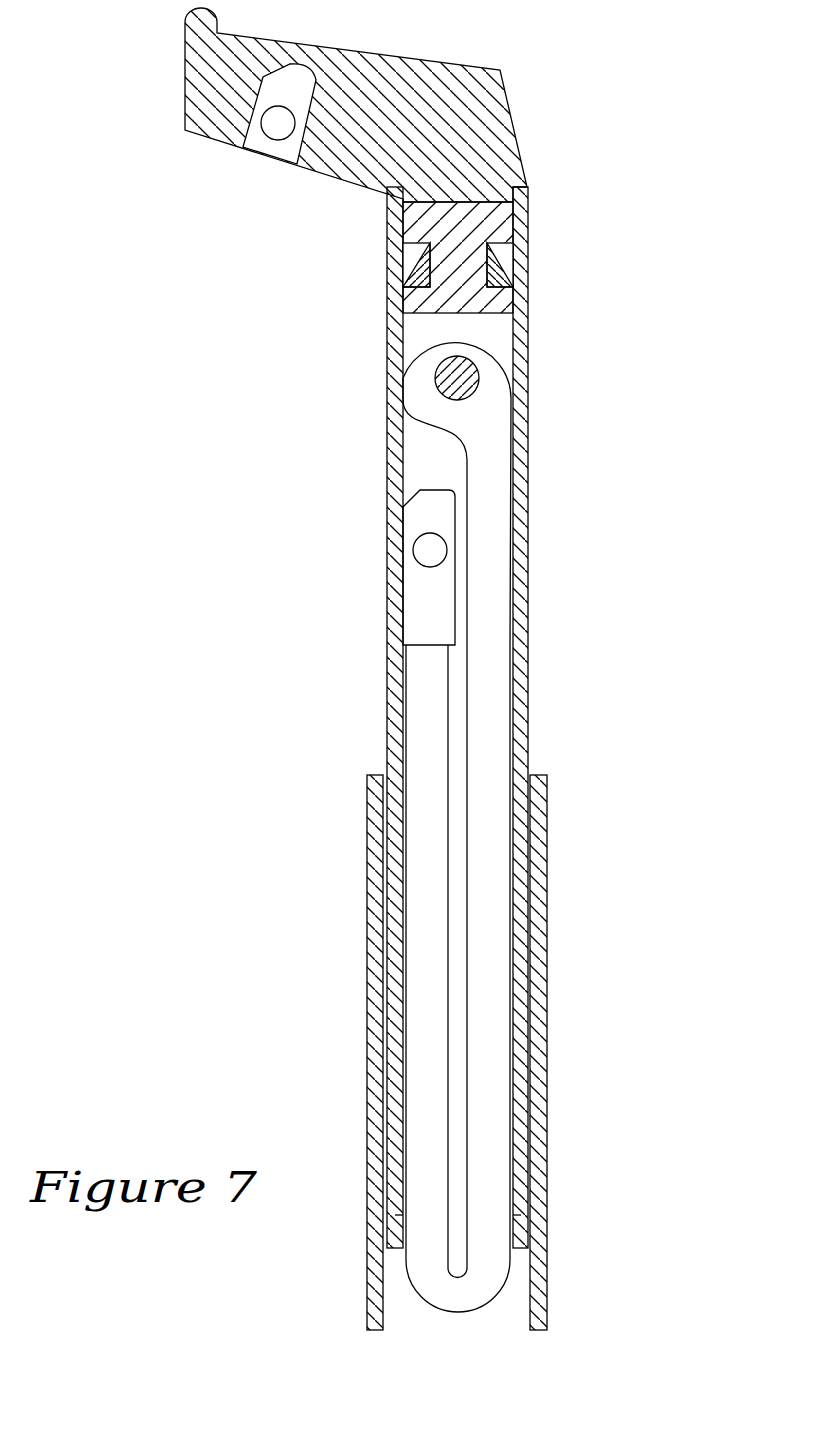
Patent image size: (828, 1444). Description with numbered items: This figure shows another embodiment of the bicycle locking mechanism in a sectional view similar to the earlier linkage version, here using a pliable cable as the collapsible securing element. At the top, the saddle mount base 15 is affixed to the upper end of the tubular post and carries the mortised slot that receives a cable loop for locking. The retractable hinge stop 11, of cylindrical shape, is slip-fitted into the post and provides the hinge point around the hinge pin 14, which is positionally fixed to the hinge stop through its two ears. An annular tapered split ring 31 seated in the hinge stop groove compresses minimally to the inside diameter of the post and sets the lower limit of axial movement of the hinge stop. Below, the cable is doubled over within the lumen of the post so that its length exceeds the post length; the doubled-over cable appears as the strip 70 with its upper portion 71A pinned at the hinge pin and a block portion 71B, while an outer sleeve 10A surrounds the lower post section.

The saddle mount base 15 is at (467, 102).
The retractable hinge stop 11 is at (503, 227).
The annular tapered split ring 31 is at (410, 280).
The hinge pin 14 is at (452, 378).
The upper arm portion 71A is at (482, 418).
The lower block portion 71B is at (435, 553).
The folded strip legs 70 is at (432, 775).
The outer sleeve 10A is at (543, 853).